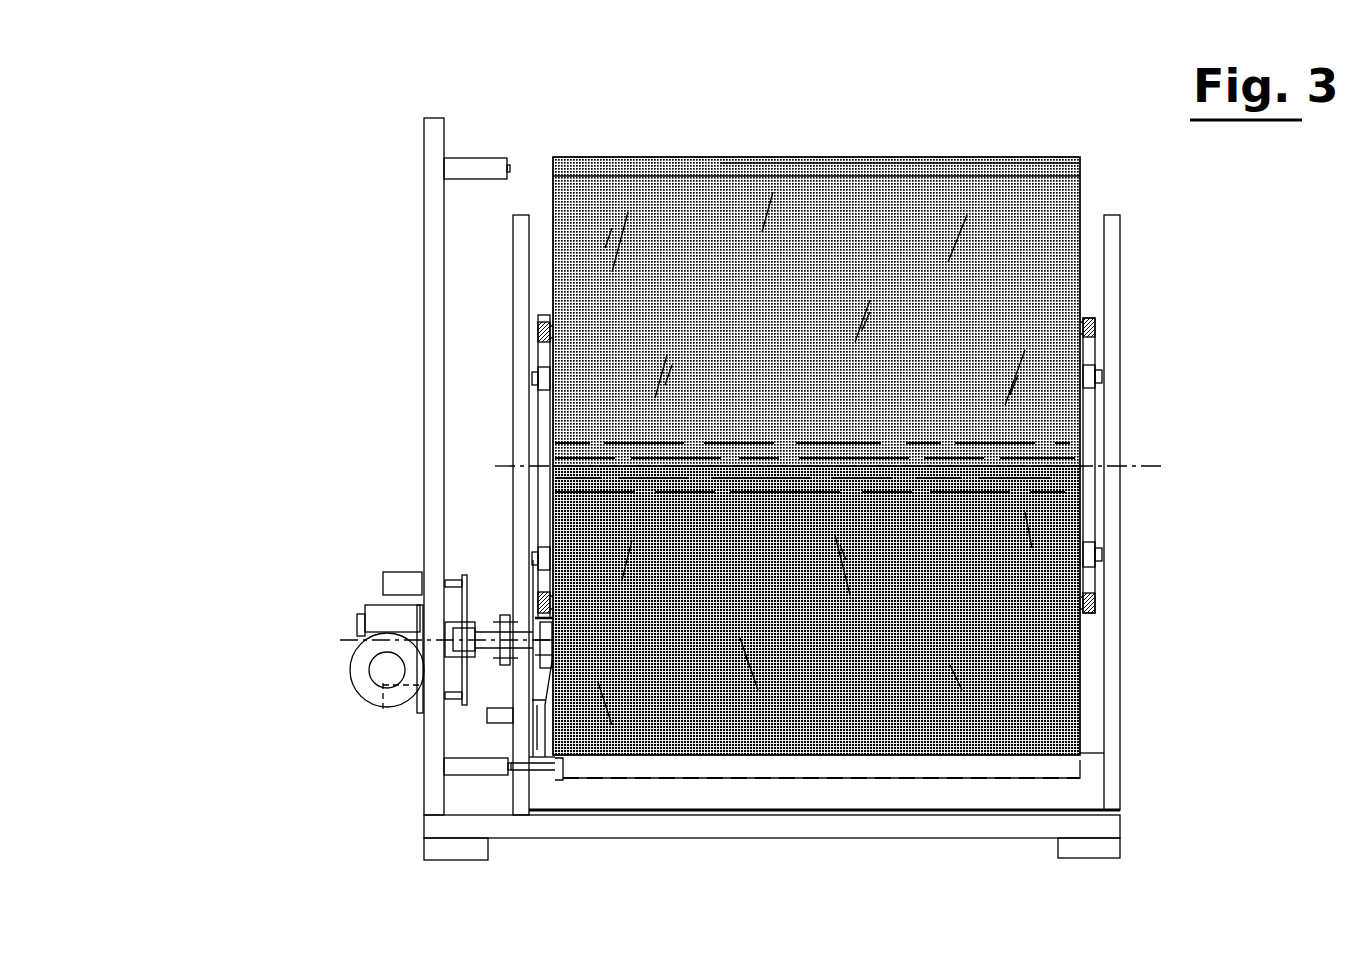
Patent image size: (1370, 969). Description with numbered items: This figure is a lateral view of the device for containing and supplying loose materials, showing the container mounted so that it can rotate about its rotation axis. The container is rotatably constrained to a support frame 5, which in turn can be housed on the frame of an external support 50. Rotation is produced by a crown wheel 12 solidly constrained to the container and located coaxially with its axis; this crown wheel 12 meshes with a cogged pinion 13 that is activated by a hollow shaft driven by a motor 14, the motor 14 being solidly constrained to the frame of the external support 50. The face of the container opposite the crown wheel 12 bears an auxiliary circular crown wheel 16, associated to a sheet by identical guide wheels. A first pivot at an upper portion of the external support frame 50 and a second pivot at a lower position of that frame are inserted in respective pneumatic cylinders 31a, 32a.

The support frame 5 is at (1145, 389).
The crown wheel 12 is at (518, 318).
The cogged pinion 13 is at (503, 648).
The motor 14 is at (364, 631).
The auxiliary circular crown wheel 16 is at (1095, 597).
The pneumatic cylinder 31a is at (472, 167).
The pneumatic cylinder 32a is at (483, 768).
The external support 50 is at (372, 504).